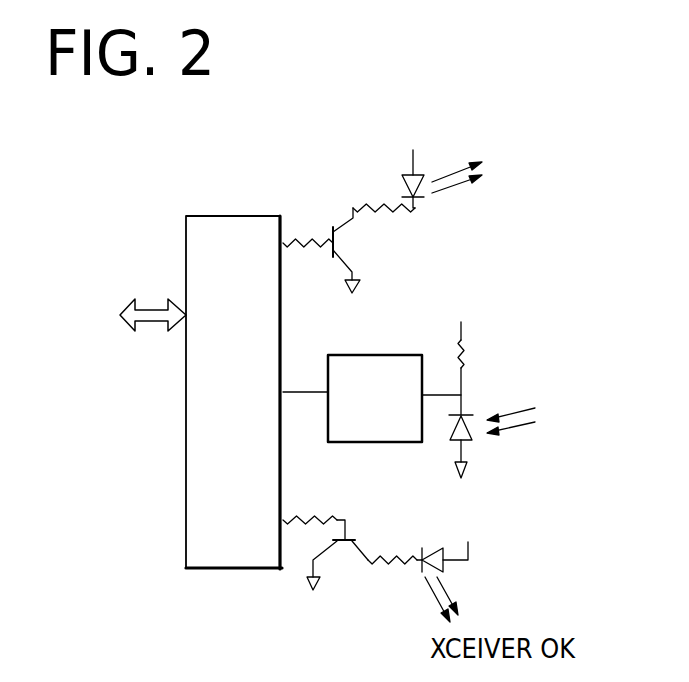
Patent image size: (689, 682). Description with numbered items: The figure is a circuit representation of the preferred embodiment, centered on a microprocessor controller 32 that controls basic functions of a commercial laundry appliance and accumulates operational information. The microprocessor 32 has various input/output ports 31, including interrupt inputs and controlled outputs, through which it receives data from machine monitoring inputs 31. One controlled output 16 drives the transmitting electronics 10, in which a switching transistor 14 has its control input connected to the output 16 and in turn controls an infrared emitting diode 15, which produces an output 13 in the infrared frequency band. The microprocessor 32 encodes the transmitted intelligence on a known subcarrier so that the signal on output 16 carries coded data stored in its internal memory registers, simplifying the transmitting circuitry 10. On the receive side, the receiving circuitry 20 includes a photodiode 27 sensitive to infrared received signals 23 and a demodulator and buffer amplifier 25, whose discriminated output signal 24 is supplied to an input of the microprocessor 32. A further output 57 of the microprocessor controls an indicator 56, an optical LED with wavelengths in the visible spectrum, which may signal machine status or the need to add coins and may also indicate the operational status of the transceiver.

The transmitting electronics 10 is at (372, 188).
The output 13 is at (464, 165).
The switching transistor 14 is at (337, 243).
The infrared emitting diode 15 is at (423, 185).
The controlled output 16 is at (285, 239).
The receiving circuitry 20 is at (368, 452).
The infrared received signals 23 is at (508, 435).
The discriminated output signal 24 is at (283, 390).
The demodulator and buffer amplifier 25 is at (400, 365).
The photodiode 27 is at (470, 423).
The input/output ports 31 is at (150, 310).
The microprocessor controller 32 is at (243, 228).
The indicator 56 is at (428, 583).
The output 57 is at (283, 520).